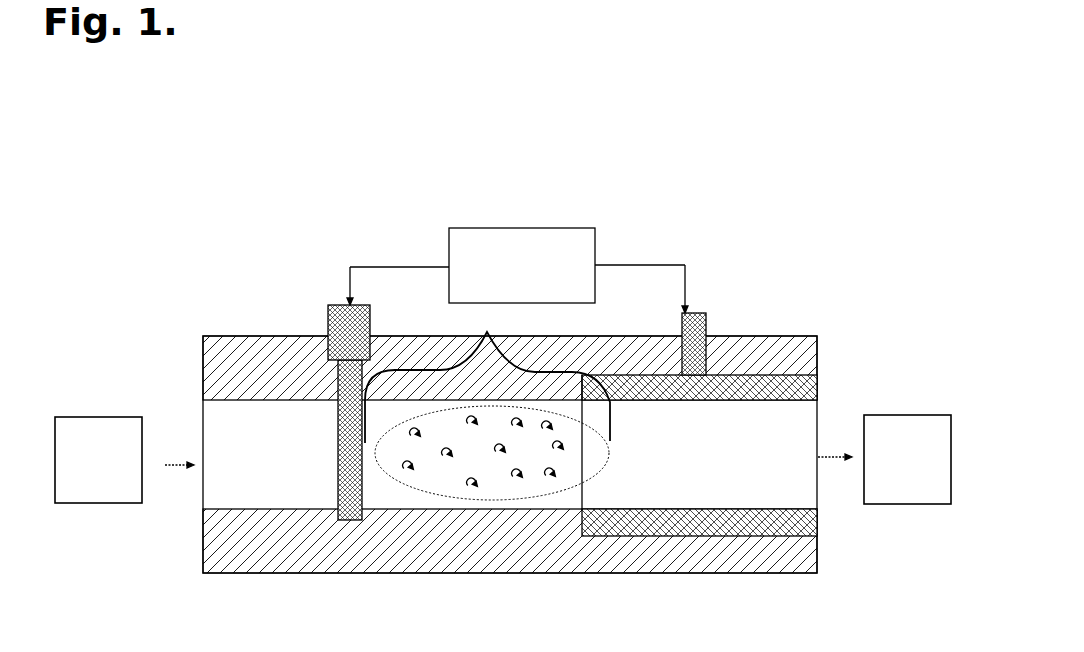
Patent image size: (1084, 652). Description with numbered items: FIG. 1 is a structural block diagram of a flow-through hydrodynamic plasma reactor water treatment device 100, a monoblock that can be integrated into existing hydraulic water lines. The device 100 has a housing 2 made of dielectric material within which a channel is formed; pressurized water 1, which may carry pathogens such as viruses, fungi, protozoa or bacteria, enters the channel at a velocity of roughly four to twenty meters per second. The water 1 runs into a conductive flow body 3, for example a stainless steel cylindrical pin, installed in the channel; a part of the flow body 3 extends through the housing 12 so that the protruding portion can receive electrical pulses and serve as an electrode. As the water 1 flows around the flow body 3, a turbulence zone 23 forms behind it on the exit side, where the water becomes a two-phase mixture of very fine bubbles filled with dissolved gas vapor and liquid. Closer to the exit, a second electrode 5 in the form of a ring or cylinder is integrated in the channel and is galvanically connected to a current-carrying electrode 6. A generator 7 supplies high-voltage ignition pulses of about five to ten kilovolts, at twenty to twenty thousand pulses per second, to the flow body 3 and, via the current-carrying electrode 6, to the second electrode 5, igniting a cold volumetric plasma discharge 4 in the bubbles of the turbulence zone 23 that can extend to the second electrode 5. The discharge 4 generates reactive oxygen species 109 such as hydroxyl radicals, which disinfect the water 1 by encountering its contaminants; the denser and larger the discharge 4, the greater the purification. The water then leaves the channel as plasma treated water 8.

The water treatment device 100 is at (145, 84).
The water 1 is at (100, 503).
The housing 12 is at (188, 416).
The housing 2 is at (201, 584).
The flow body 3 is at (320, 303).
The current-carrying electrode 6 is at (718, 301).
The voltage source 7 is at (490, 219).
The turbulence zone 23 is at (487, 375).
The volumetric plasma discharge 4 is at (475, 524).
The reactive oxygen species 109 is at (508, 480).
The second electrode 5 is at (619, 544).
The plasma treated water 8 is at (907, 504).